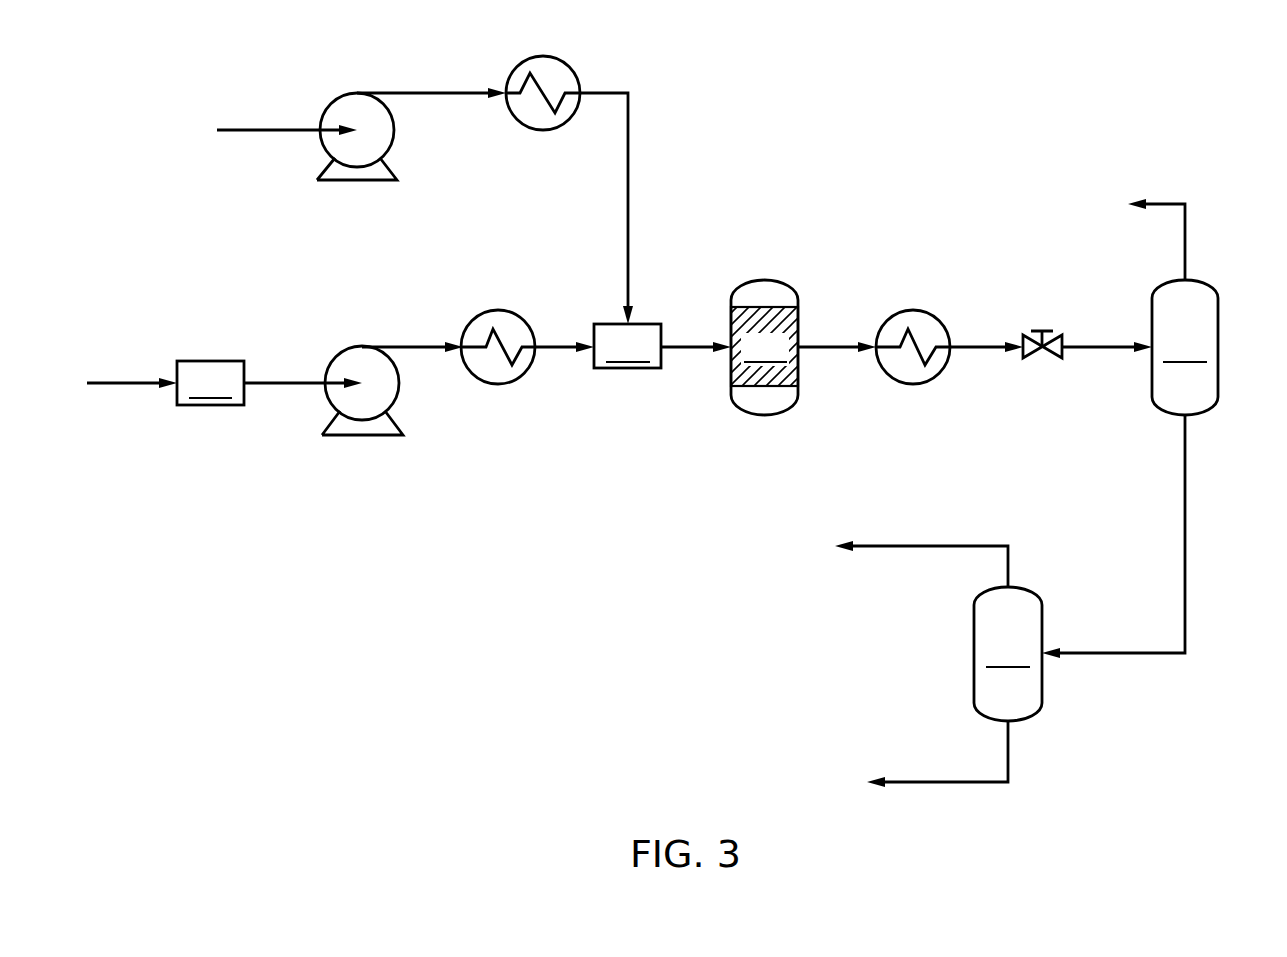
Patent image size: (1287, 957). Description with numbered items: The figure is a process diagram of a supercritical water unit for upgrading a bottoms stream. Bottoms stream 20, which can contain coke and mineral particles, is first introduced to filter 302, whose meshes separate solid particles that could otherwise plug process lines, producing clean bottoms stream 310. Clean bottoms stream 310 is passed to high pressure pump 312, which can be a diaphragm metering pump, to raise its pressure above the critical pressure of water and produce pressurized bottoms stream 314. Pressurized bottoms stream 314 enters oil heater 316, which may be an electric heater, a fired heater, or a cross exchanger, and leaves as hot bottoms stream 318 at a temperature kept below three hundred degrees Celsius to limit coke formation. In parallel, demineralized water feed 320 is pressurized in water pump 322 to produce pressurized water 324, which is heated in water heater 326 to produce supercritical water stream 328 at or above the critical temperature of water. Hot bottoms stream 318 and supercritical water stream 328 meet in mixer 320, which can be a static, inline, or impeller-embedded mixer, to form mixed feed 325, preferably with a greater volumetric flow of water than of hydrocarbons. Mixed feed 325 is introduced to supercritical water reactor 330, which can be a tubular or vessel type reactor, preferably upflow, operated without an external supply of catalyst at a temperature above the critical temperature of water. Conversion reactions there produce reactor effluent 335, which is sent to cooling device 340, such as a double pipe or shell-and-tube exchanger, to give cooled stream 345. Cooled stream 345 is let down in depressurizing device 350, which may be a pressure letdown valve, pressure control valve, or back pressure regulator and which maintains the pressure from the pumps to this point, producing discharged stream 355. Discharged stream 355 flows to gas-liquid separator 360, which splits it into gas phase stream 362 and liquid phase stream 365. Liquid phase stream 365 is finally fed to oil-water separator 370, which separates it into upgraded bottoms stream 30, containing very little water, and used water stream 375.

The bottoms stream 20 is at (128, 383).
The upgraded bottoms stream 30 is at (893, 546).
The filter 302 is at (210, 383).
The clean bottoms stream 310 is at (306, 383).
The high pressure pump 312 is at (350, 436).
The pressurized bottoms stream 314 is at (413, 347).
The oil heater 316 is at (487, 382).
The hot bottoms stream 318 is at (563, 347).
The mixer 320 is at (253, 130).
The water pump 322 is at (342, 181).
The pressurized water 324 is at (437, 93).
The water heater 326 is at (531, 130).
The supercritical water stream 328 is at (628, 145).
The mixed feed 325 is at (686, 347).
The supercritical water reactor 330 is at (764, 347).
The reactor effluent 335 is at (828, 347).
The cooling device 340 is at (903, 383).
The cooled stream 345 is at (973, 347).
The depressurizing device 350 is at (1045, 330).
The discharged stream 355 is at (1108, 349).
The gas-liquid separator 360 is at (1185, 347).
The gas phase stream 362 is at (1185, 243).
The liquid phase stream 365 is at (1185, 495).
The oil-water separator 370 is at (1008, 654).
The used water stream 375 is at (930, 782).